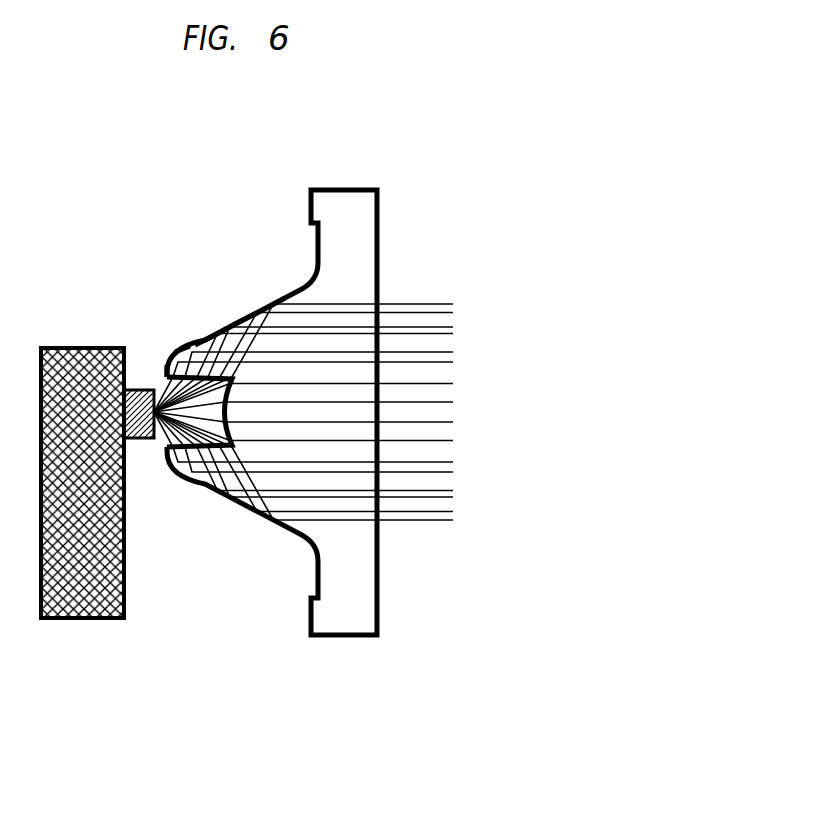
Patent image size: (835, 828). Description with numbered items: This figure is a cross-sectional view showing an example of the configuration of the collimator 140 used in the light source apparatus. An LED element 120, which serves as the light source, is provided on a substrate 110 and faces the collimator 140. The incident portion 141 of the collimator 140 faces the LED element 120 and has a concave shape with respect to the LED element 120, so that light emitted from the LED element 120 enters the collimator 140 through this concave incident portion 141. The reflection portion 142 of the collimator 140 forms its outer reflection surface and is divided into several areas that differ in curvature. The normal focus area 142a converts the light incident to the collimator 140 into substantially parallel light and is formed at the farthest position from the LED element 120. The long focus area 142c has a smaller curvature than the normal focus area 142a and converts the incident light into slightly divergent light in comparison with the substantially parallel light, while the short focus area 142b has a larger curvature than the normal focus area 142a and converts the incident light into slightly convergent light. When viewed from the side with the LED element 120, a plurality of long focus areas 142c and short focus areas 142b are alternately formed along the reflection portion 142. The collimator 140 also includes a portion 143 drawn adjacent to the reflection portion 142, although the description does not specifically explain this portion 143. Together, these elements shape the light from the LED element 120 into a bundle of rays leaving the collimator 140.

The substrate 110 is at (58, 621).
The LED element 120 is at (136, 440).
The collimator 140 is at (255, 431).
The incident portion 141 is at (158, 445).
The reflection portion 142 is at (238, 510).
The normal focus area 142a is at (268, 307).
The short focus area 142b is at (226, 329).
The long focus area 142c is at (247, 318).
The flange / holder portion 143 is at (378, 613).